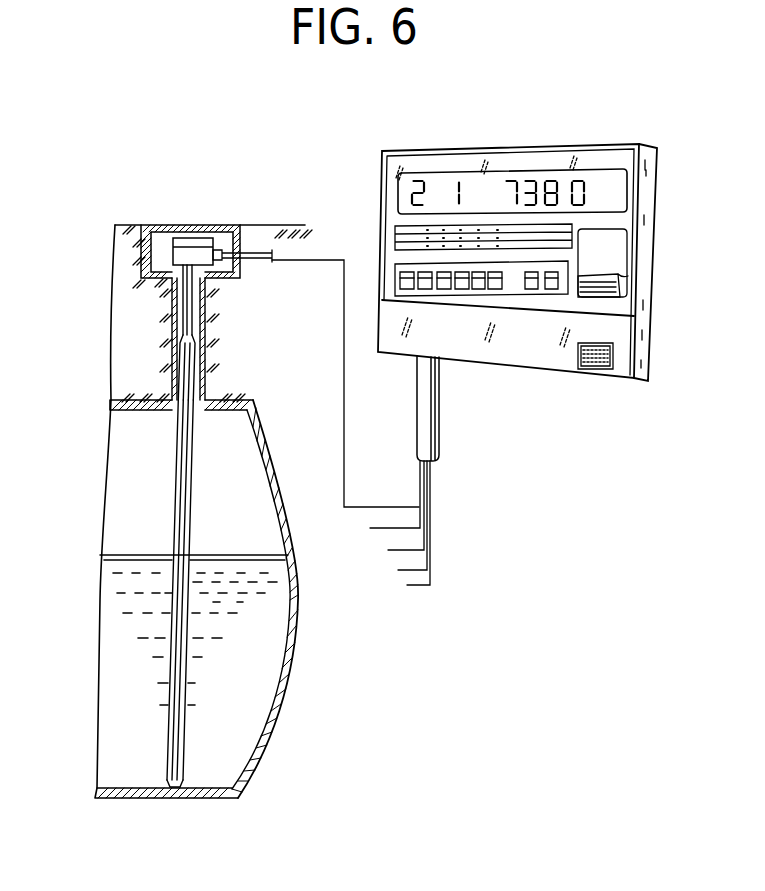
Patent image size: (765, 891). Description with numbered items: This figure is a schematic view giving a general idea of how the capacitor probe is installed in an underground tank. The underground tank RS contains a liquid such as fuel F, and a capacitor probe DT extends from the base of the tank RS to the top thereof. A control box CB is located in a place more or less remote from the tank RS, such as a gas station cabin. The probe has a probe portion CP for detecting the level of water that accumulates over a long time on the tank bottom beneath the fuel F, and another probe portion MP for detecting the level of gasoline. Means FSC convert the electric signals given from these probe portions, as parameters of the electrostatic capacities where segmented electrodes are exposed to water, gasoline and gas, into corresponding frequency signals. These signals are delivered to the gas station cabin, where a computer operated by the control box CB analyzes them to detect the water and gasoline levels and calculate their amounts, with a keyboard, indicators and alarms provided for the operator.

The control box CB is at (598, 139).
The means for converting electric signals FSC is at (186, 366).
The capacitor probe DT is at (191, 507).
The probe portion for detecting the level of gasoline MP is at (174, 585).
The fuel F is at (265, 660).
The underground tank RS is at (267, 748).
The probe portion for detecting the level of water CP is at (182, 763).